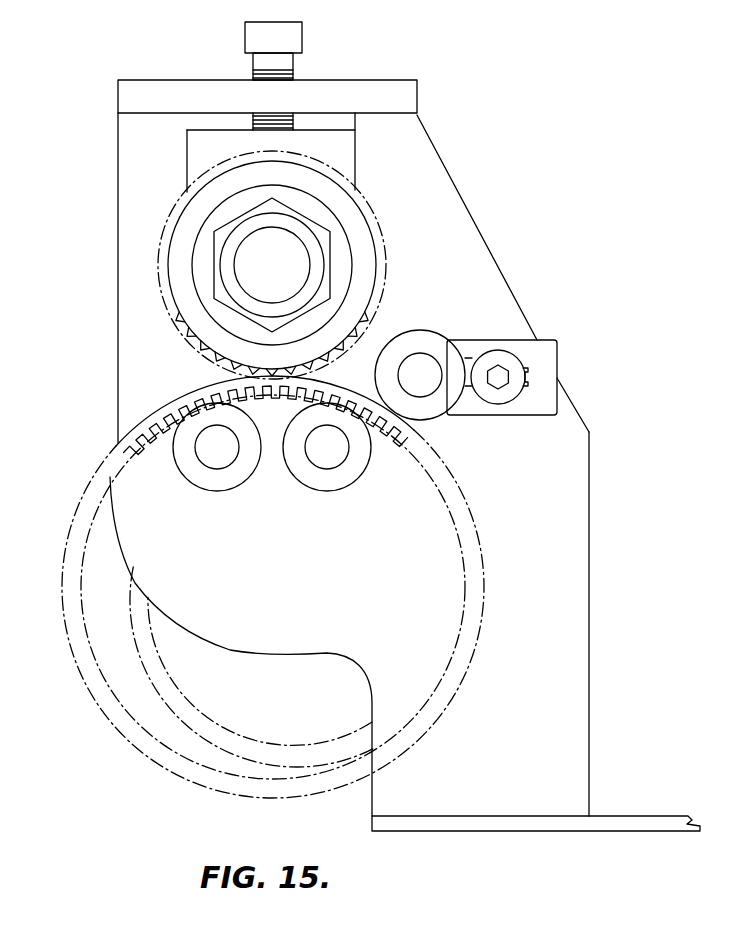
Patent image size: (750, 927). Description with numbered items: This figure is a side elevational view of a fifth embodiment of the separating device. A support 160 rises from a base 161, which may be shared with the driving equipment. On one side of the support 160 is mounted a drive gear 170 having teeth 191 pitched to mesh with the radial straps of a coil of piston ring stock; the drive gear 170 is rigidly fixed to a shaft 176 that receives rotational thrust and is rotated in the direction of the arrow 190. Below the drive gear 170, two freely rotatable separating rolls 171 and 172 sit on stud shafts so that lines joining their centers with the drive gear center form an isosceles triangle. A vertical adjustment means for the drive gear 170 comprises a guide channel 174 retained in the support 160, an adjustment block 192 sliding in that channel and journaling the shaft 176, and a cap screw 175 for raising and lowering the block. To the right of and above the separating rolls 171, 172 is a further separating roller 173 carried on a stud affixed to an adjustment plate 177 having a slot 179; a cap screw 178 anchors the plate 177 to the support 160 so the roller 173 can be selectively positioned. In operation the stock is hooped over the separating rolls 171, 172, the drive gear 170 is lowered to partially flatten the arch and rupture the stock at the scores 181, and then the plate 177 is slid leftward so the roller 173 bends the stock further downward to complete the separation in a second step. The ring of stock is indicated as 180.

The support 160 is at (582, 623).
The base 161 is at (503, 822).
The drive gear 170 is at (366, 322).
The separating roll 171 is at (219, 488).
The separating roll 172 is at (332, 488).
The separating roller 173 is at (422, 337).
The guide channel 174 is at (334, 123).
The cap screw 175 is at (295, 43).
The shaft 176 is at (272, 265).
The adjustment plate 177 is at (548, 347).
The cap screw 178 is at (508, 393).
The slot 179 is at (528, 367).
The ring gear 180 is at (190, 390).
The scores 181 is at (127, 430).
The arrow 190 is at (192, 310).
The teeth 191 is at (178, 333).
The adjustment block 192 is at (310, 130).